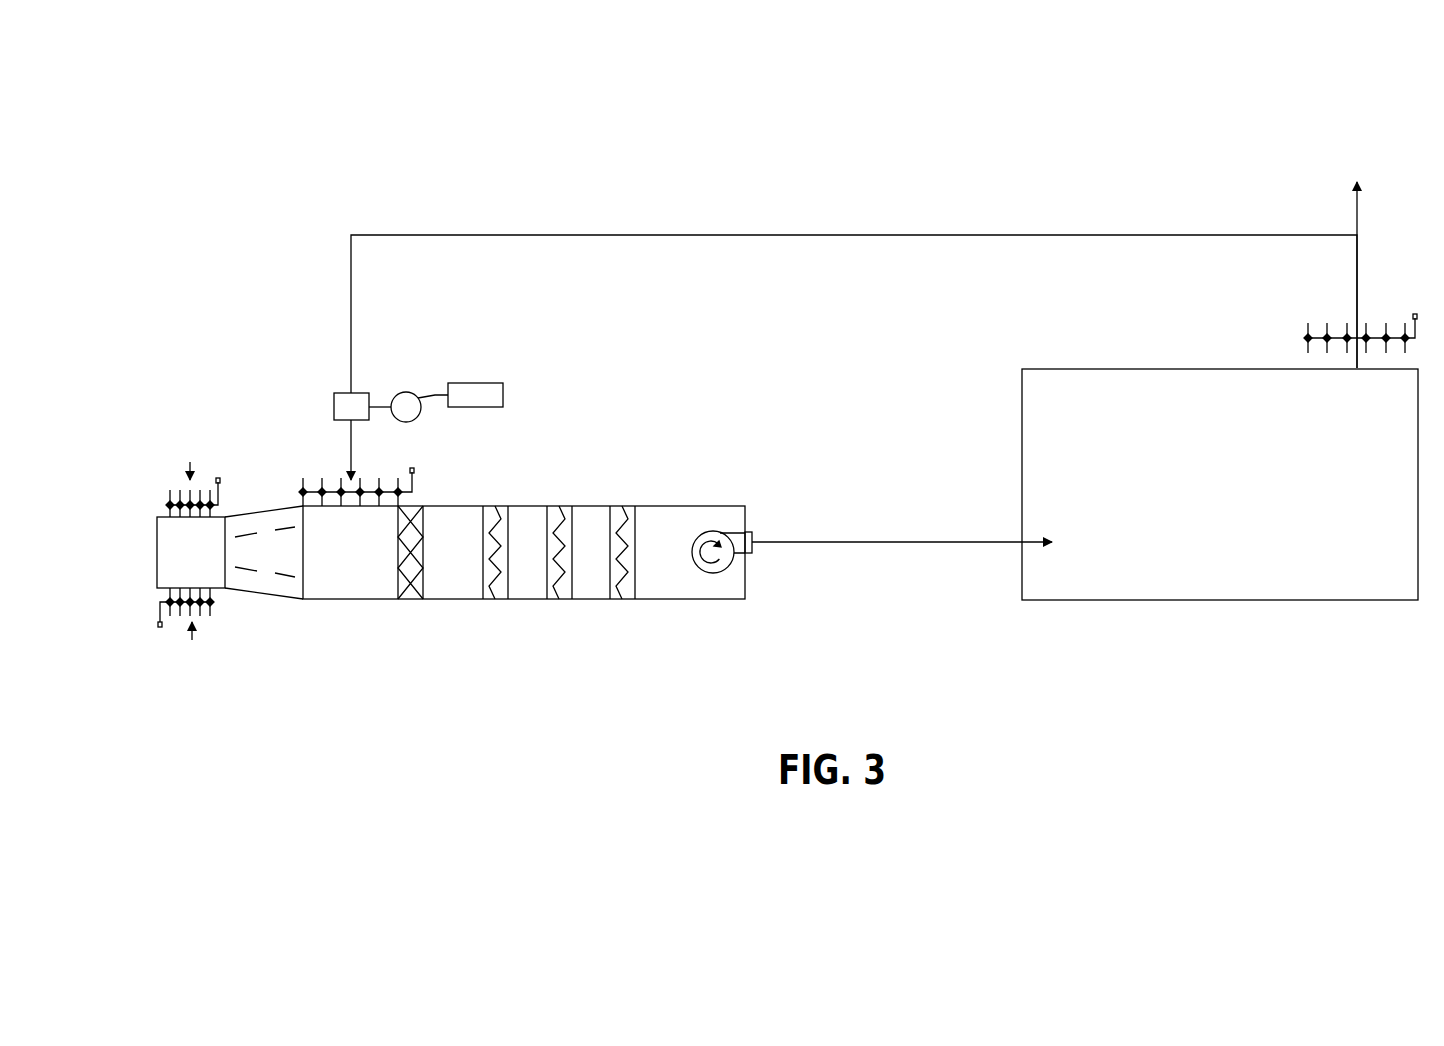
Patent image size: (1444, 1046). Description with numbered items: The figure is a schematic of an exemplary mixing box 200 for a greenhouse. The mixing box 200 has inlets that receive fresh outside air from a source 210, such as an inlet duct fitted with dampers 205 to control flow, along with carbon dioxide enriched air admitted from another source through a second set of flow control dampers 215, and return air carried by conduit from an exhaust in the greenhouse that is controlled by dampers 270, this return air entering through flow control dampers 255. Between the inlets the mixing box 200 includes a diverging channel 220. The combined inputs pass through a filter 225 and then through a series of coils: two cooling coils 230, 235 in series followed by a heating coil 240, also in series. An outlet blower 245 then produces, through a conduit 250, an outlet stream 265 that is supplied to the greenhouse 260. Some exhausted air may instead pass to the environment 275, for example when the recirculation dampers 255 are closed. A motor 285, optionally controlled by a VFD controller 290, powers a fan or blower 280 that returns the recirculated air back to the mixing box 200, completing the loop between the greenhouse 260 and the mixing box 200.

The mixing box 200 is at (525, 500).
The dampers 205 is at (168, 505).
The source 210 is at (220, 463).
The flow control dampers 215 is at (212, 601).
The diverging channel 220 is at (275, 598).
The filter 225 is at (413, 599).
The cooling coil 230 is at (497, 599).
The cooling coil 235 is at (560, 599).
The heating coil 240 is at (623, 599).
The outlet blower 245 is at (708, 599).
The conduit 250 is at (903, 545).
The flow control dampers 255 is at (303, 492).
The greenhouse 260 is at (1040, 424).
The outlet stream 265 is at (1085, 553).
The dampers 270 is at (1305, 340).
The environment 275 is at (1355, 207).
The fan or blower 280 is at (335, 393).
The motor 285 is at (410, 422).
The VFD controller 290 is at (478, 408).